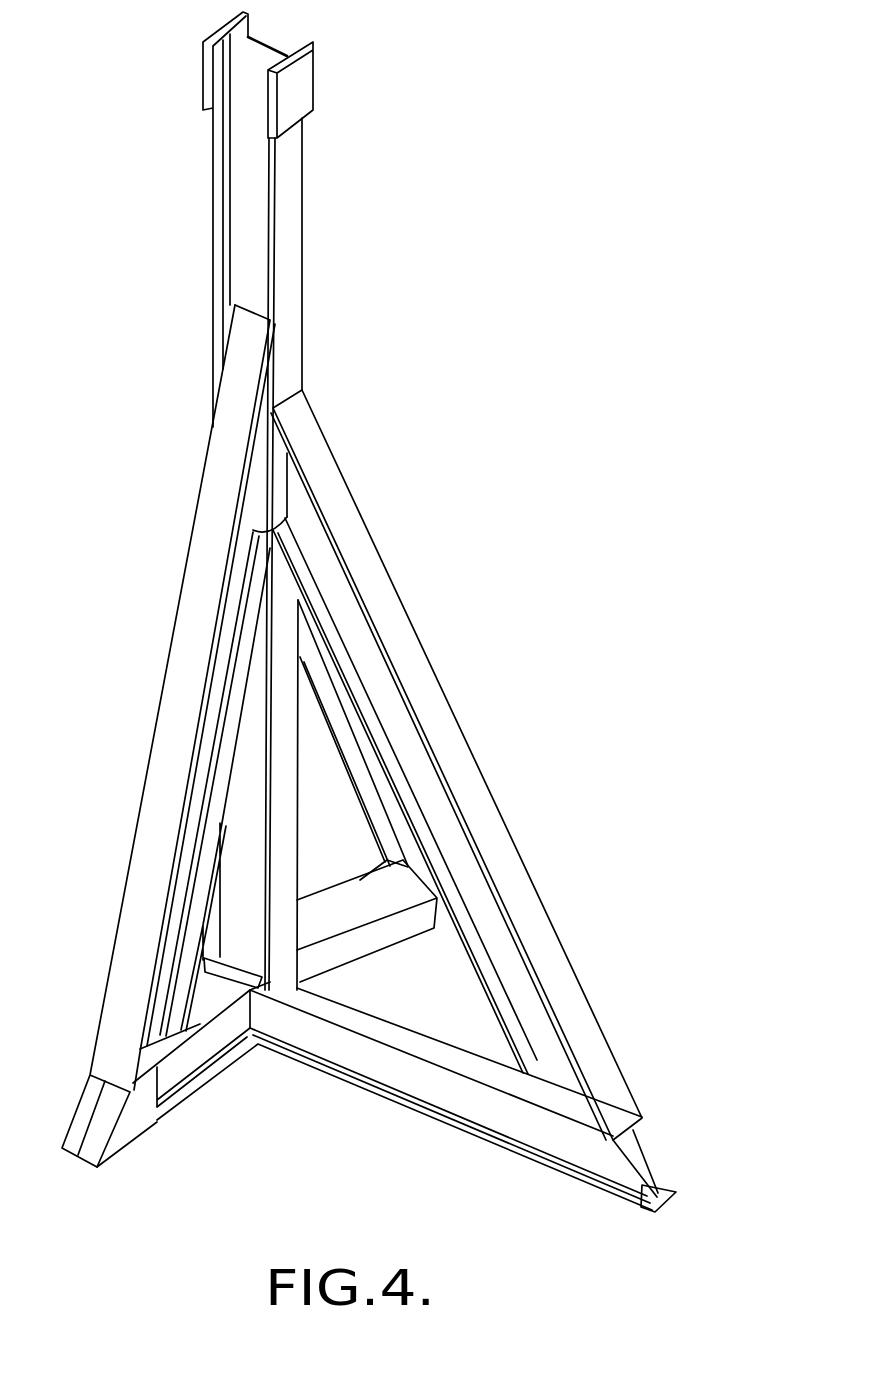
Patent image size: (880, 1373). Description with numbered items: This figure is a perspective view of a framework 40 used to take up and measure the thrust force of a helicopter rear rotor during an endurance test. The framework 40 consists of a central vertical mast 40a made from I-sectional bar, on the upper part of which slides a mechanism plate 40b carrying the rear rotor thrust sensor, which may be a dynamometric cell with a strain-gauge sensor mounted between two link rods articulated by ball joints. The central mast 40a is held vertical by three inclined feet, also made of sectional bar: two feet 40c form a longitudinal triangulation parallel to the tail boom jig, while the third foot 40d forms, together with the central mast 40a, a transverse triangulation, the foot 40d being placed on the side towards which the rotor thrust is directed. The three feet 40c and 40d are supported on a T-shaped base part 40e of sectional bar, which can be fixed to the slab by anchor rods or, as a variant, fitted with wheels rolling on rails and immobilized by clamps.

The framework 40 is at (188, 442).
The central vertical mast 40a is at (292, 215).
The mechanism plate 40b is at (300, 80).
The inclined feet 40c is at (175, 612).
The third inclined foot 40d is at (530, 908).
The T-shaped base part 40e is at (333, 1045).